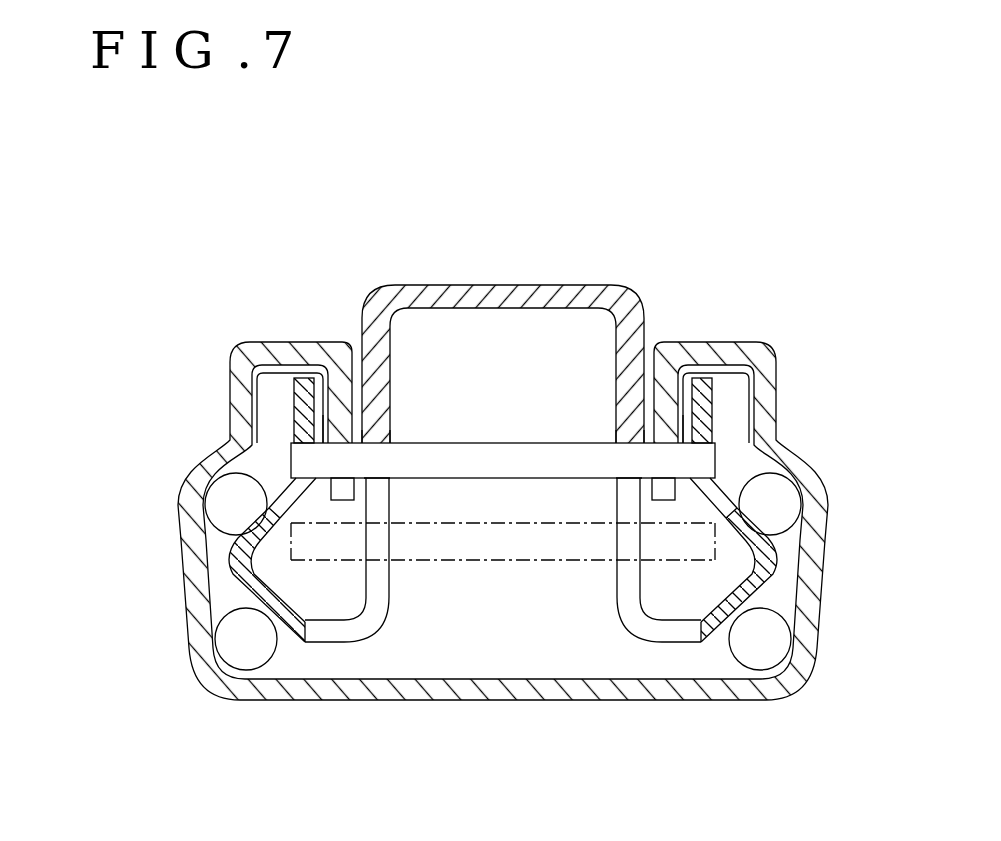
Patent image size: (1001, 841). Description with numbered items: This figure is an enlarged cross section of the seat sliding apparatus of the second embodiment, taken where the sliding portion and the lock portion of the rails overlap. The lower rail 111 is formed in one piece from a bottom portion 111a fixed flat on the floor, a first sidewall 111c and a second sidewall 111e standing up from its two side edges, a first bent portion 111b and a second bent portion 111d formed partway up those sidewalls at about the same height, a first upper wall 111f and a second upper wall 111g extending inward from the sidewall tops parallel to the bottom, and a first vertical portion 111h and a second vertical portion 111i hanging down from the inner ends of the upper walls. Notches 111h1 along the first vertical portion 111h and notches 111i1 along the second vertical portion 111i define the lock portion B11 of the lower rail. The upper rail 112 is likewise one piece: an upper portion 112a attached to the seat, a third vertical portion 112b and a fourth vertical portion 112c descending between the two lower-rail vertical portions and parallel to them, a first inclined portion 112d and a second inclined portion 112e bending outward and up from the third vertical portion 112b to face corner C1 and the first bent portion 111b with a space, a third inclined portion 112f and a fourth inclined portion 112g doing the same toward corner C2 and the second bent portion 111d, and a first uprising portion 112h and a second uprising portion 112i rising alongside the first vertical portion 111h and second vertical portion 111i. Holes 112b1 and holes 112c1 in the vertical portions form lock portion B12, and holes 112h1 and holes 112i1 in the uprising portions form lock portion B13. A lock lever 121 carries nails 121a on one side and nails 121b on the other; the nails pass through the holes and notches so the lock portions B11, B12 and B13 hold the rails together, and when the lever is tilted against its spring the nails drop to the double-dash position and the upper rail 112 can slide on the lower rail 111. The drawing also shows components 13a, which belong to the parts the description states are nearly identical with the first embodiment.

The lower rail 111 is at (683, 703).
The bottom portion 111a is at (500, 690).
The first bent portion 111b is at (816, 473).
The first sidewall 111c is at (819, 590).
The second bent portion 111d is at (190, 473).
The second sidewall 111e is at (187, 590).
The first upper wall 111f is at (718, 352).
The second upper wall 111g is at (288, 352).
The first vertical portion 111h is at (653, 380).
The notches 111h1 is at (683, 367).
The second vertical portion 111i is at (353, 378).
The notches 111i1 is at (323, 367).
The upper rail 112 is at (549, 284).
The upper portion 112a is at (488, 302).
The third vertical portion 112b is at (617, 330).
The holes 112b1 is at (614, 436).
The fourth vertical portion 112c is at (383, 340).
The holes 112c1 is at (388, 440).
The first inclined portion 112d is at (770, 600).
The second inclined portion 112e is at (763, 552).
The third inclined portion 112f is at (236, 600).
The fourth inclined portion 112g is at (243, 550).
The first uprising portion 112h is at (773, 350).
The holes 112h1 is at (752, 440).
The second uprising portion 112i is at (233, 350).
The holes 112i1 is at (254, 440).
The lock lever 121 is at (480, 443).
The nails 121a is at (776, 443).
The nails 121b is at (230, 440).
The balls 13a is at (215, 504).
The lock portion B11 is at (343, 506).
The lock portion B12 is at (378, 486).
The lock portion B13 is at (290, 424).
The corner C1 is at (799, 672).
The corner C2 is at (207, 672).